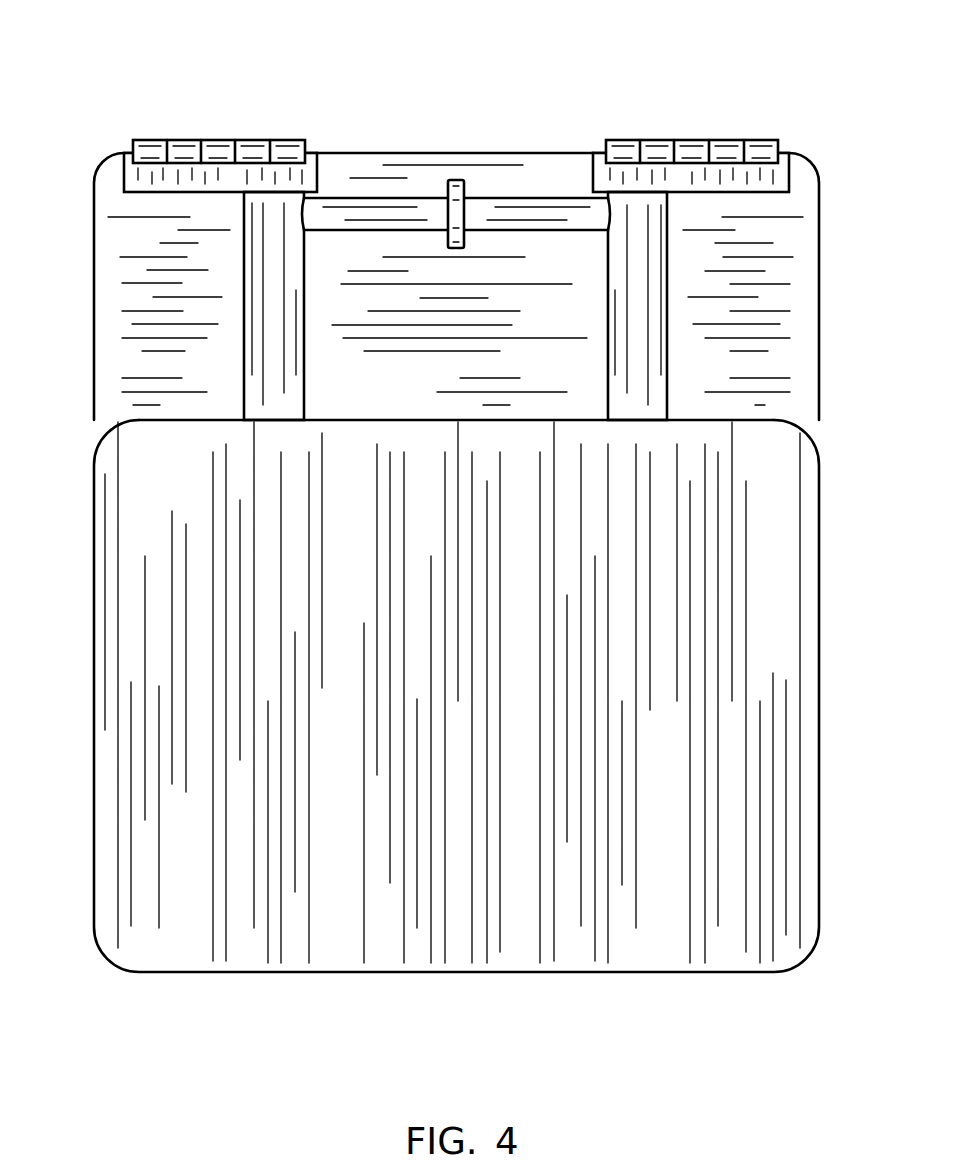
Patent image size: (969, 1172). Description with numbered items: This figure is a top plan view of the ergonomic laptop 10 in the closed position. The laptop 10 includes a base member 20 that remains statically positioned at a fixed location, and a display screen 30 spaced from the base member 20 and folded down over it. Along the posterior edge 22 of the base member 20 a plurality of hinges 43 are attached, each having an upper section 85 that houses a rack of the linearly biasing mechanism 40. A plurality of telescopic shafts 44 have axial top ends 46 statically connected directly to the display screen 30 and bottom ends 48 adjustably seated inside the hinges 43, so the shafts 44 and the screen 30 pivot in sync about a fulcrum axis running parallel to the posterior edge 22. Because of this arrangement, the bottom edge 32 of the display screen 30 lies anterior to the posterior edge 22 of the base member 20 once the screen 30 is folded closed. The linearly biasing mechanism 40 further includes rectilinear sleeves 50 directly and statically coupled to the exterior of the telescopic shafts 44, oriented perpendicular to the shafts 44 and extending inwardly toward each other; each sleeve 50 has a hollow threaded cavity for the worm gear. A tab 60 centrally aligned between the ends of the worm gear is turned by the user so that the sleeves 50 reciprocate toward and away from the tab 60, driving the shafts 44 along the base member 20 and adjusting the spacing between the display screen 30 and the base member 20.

The ergonomic laptop 10 is at (80, 78).
The base member 20 is at (112, 355).
The posterior edge 22 is at (557, 152).
The display screen 30 is at (178, 956).
The bottom edge 32 is at (138, 421).
The linearly biasing mechanism 40 is at (338, 178).
The hinges 43 is at (184, 152).
The telescopic shafts 44 is at (466, 286).
The axial top ends 46 is at (655, 413).
The bottom ends 48 is at (650, 216).
The rectilinear sleeves 50 is at (397, 213).
The tab 60 is at (461, 192).
The upper section 85 is at (783, 172).